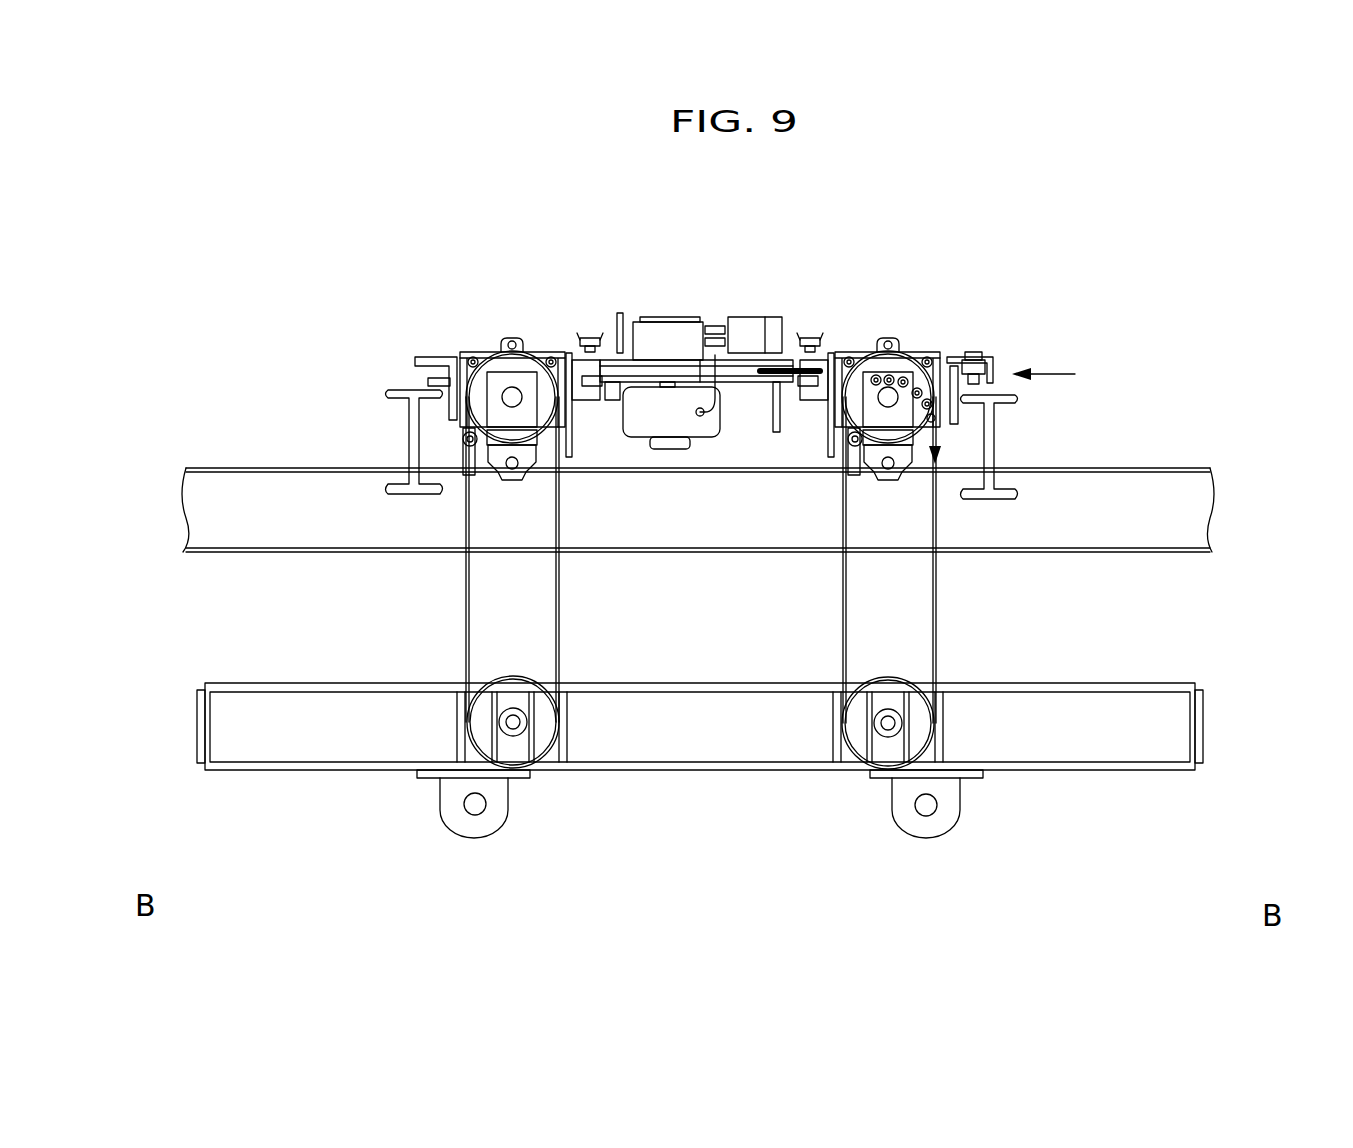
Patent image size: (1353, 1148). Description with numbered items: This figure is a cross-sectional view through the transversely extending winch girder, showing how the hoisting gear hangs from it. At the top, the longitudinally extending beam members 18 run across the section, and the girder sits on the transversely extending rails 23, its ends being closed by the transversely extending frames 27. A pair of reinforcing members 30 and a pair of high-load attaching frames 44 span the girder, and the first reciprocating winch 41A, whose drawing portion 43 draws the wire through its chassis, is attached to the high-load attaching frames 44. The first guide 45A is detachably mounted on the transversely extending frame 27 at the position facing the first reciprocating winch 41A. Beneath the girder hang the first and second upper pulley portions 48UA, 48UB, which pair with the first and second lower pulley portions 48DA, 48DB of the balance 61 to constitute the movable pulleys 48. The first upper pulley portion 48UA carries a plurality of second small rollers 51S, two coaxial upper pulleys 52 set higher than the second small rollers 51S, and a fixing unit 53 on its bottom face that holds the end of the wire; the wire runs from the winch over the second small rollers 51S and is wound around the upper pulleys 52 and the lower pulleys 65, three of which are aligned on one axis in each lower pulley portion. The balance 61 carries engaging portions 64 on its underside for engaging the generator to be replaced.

The beam member 18 is at (226, 468).
The transversely extending rail 23 is at (410, 437).
The transversely extending frame 27 is at (418, 356).
The reinforcing member 30 is at (576, 398).
The first reciprocating winch 41A is at (745, 294).
The drawing portion 43 is at (675, 327).
The high-load attaching frame 44 is at (590, 336).
The first guide 45A is at (973, 351).
The movable pulley 48 is at (703, 560).
The second upper pulley portion 48UB is at (512, 322).
The first upper pulley portion 48UA is at (888, 322).
The second lower pulley portion 48DB is at (524, 782).
The first lower pulley portion 48DA is at (878, 782).
The second small roller 51S is at (898, 375).
The upper pulley 52 is at (492, 368).
The fixing unit 53 is at (473, 478).
The balance 61 is at (722, 788).
The engaging portion 64 is at (455, 800).
The lower pulley 65 is at (512, 676).